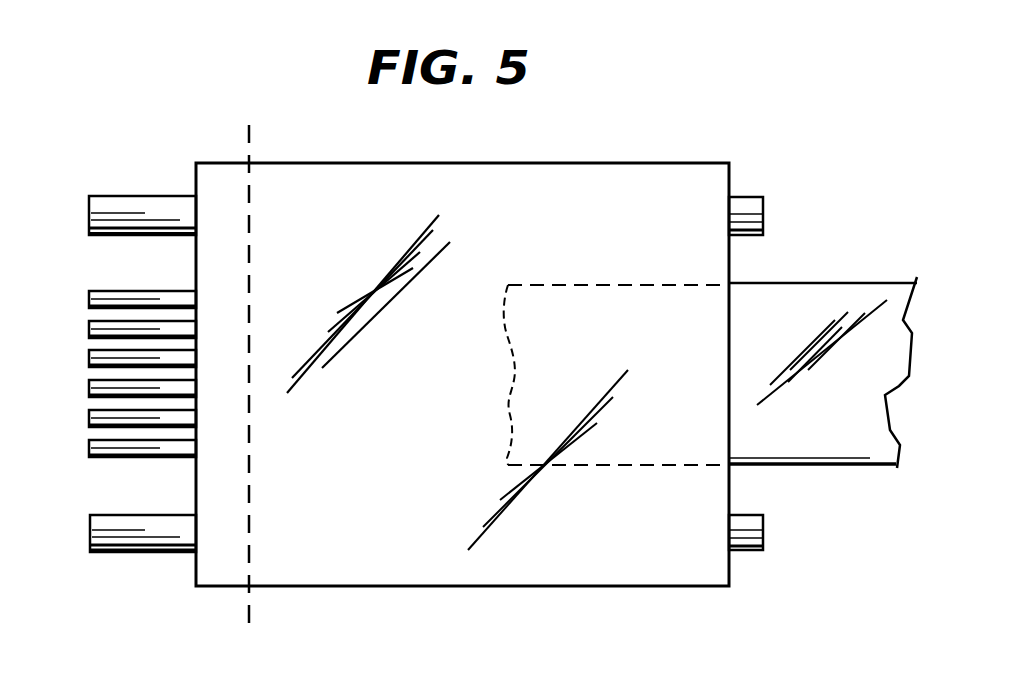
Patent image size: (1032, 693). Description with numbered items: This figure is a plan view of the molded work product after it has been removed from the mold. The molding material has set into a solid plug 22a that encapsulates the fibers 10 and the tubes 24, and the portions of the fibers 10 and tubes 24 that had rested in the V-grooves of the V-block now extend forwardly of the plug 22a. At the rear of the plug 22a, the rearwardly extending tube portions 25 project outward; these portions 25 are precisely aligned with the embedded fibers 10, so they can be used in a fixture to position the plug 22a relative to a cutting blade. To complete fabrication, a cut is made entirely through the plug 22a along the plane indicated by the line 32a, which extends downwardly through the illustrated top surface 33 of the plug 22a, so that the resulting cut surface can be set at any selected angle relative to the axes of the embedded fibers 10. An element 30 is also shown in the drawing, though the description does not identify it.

The fibers 10 is at (110, 456).
The tubes 24 is at (128, 548).
The rearwardly extending tube portions 25 is at (752, 552).
The flexible strip 30 is at (825, 445).
The cutting plane line 32a is at (251, 377).
The top surface 33 is at (607, 175).
The solid plug 22a is at (402, 527).